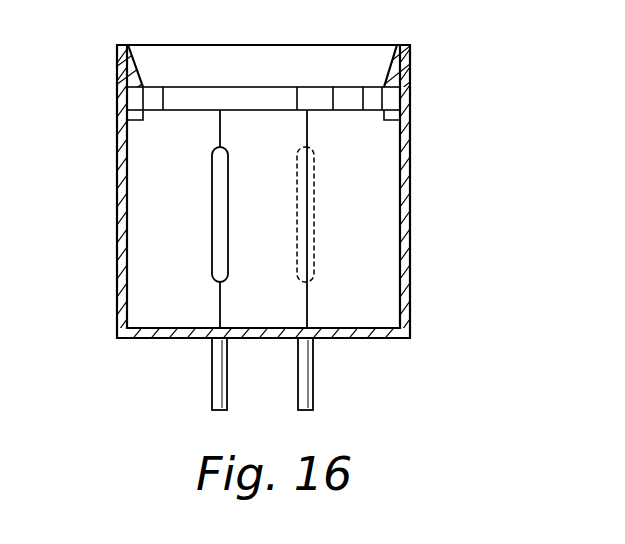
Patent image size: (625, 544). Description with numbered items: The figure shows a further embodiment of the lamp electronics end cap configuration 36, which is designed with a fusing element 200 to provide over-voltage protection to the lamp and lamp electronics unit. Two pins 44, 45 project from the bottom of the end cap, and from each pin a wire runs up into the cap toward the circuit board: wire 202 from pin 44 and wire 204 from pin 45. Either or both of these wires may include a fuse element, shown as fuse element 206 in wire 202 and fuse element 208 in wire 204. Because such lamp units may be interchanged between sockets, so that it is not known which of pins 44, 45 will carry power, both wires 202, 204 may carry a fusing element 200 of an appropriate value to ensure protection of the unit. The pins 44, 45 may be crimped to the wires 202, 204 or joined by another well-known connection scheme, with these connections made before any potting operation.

The lamp electronics end cap configuration 36 is at (116, 290).
The pin 44 is at (212, 373).
The pin 45 is at (313, 380).
The fusing element 200 is at (257, 219).
The wire 202 is at (218, 303).
The wire 204 is at (307, 302).
The fuse element 206 is at (218, 173).
The fuse element 208 is at (315, 192).